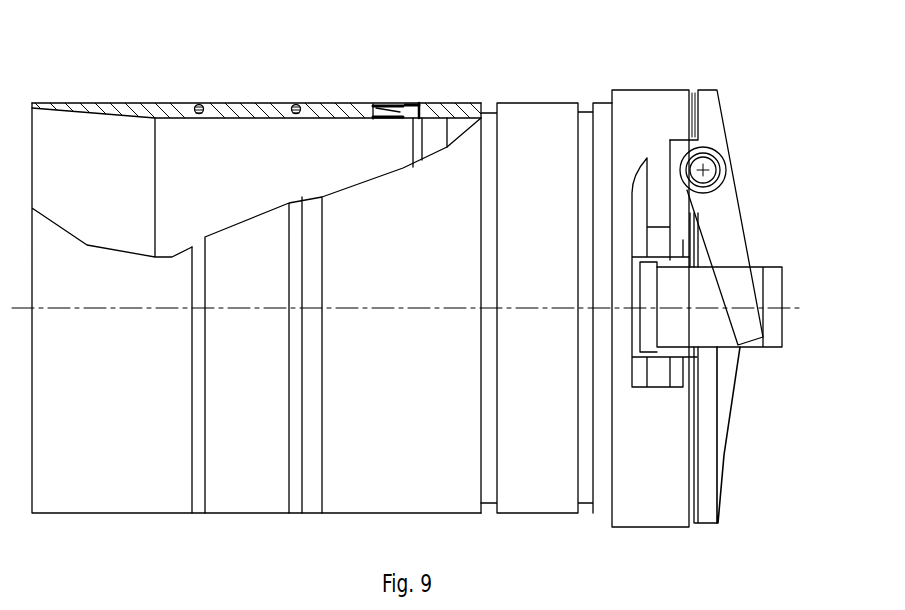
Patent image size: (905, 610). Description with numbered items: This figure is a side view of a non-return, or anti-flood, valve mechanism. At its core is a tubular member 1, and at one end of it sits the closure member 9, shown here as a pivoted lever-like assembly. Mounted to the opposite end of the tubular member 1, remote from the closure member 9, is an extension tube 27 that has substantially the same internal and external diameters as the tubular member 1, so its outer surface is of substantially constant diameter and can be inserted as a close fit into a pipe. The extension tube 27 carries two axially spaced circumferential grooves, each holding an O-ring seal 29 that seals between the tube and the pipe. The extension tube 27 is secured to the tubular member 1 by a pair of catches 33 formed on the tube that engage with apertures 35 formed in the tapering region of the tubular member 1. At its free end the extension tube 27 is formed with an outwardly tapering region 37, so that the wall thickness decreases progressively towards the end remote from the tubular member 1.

The tubular member 1 is at (543, 103).
The closure member 9 is at (723, 487).
The extension tube 27 is at (236, 103).
The O-ring seal 29 is at (200, 103).
The catch 33 is at (389, 103).
The aperture 35 is at (421, 92).
The outwardly tapering region 37 is at (67, 104).